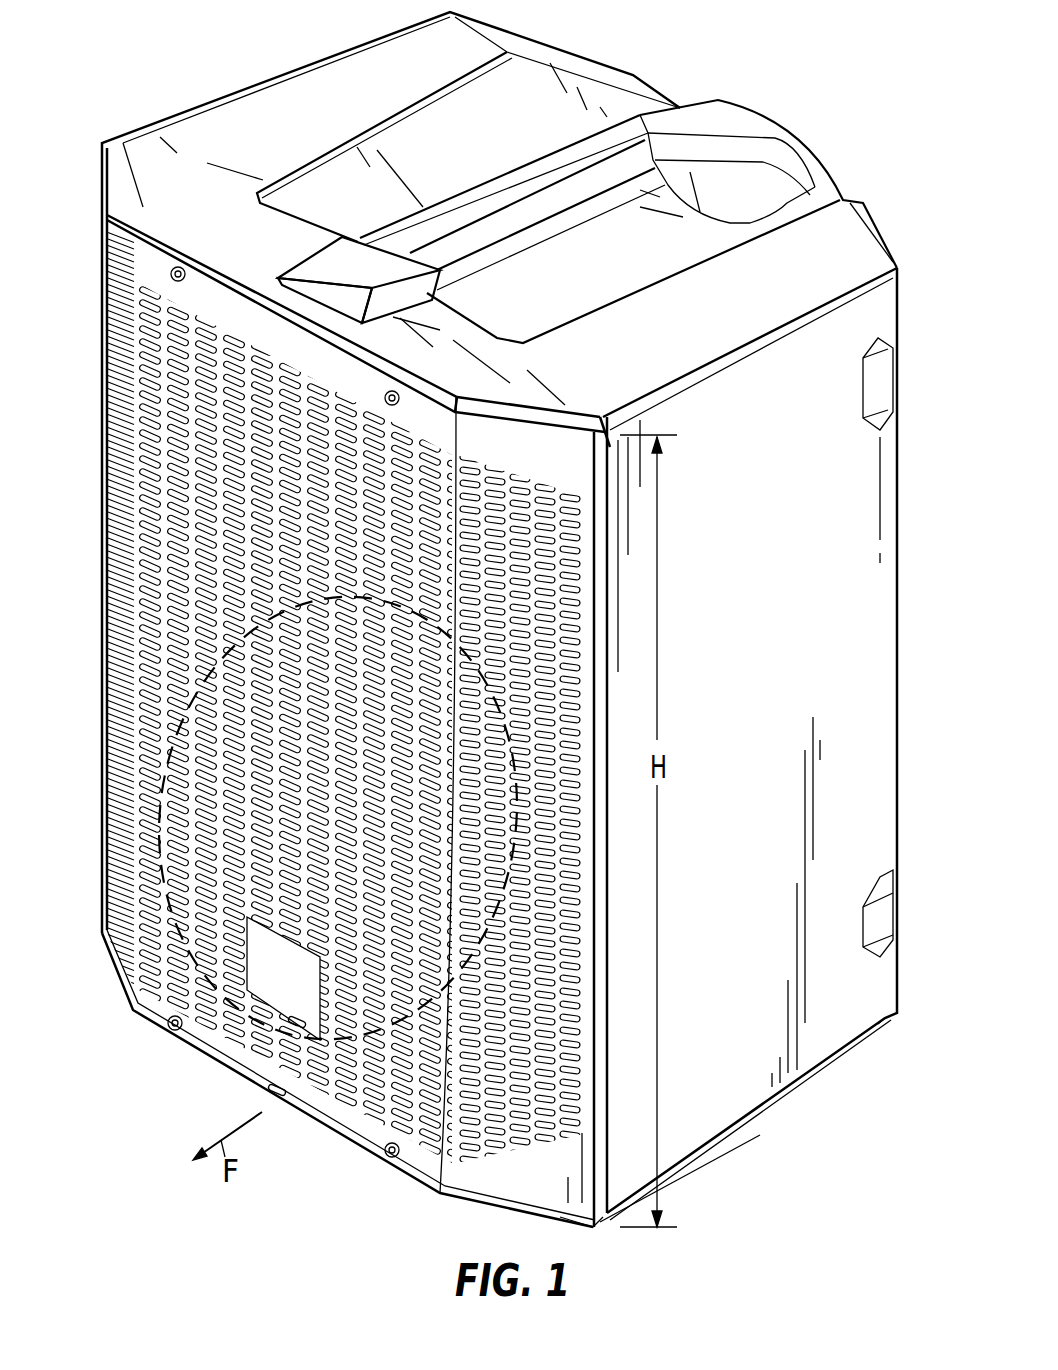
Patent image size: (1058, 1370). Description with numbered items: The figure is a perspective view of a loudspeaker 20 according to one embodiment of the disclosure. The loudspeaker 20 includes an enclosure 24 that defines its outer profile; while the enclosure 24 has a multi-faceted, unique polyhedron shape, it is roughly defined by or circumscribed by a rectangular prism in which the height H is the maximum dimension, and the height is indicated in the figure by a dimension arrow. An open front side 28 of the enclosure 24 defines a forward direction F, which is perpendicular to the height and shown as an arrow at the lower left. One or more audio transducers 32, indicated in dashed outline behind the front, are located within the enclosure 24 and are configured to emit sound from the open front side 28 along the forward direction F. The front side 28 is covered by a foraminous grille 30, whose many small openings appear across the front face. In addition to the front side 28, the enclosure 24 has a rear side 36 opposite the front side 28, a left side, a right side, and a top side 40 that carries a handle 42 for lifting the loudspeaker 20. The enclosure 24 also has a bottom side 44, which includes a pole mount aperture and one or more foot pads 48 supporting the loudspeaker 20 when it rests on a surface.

The loudspeaker 20 is at (830, 106).
The enclosure 24 is at (860, 307).
The front side 28 is at (157, 550).
The foraminous grille 30 is at (340, 1122).
The audio transducer 32 is at (143, 754).
The rear side 36 is at (890, 677).
The top side 40 is at (262, 120).
The handle 42 is at (592, 145).
The bottom side 44 is at (853, 1037).
The foot pad 48 is at (727, 1130).